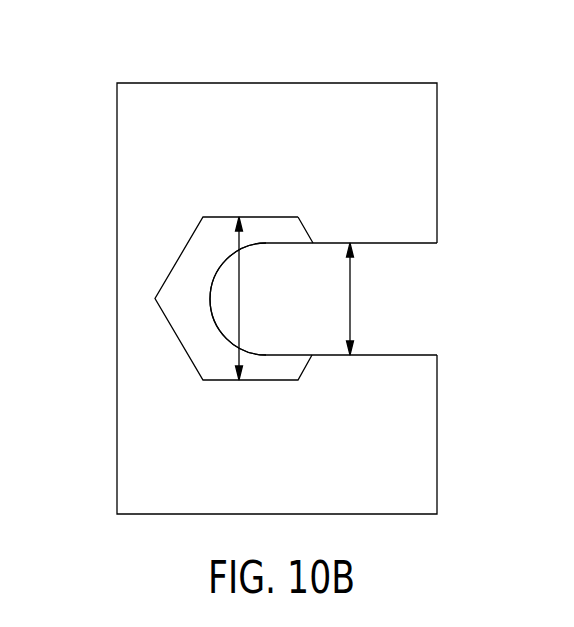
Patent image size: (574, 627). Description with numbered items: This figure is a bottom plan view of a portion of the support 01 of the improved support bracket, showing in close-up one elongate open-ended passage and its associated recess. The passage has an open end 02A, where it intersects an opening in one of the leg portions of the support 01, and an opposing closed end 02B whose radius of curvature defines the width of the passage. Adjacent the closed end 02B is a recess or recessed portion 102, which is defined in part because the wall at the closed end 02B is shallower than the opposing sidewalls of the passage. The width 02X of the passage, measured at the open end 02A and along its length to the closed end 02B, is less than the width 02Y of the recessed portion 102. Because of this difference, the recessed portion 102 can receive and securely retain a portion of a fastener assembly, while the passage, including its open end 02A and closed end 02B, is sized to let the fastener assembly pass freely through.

The support 01 is at (372, 102).
The open end 02A is at (412, 300).
The closed end 02B is at (208, 293).
The recessed portion 102 is at (168, 328).
The width of the passage 02X is at (347, 290).
The width of the recessed portion 02Y is at (240, 327).